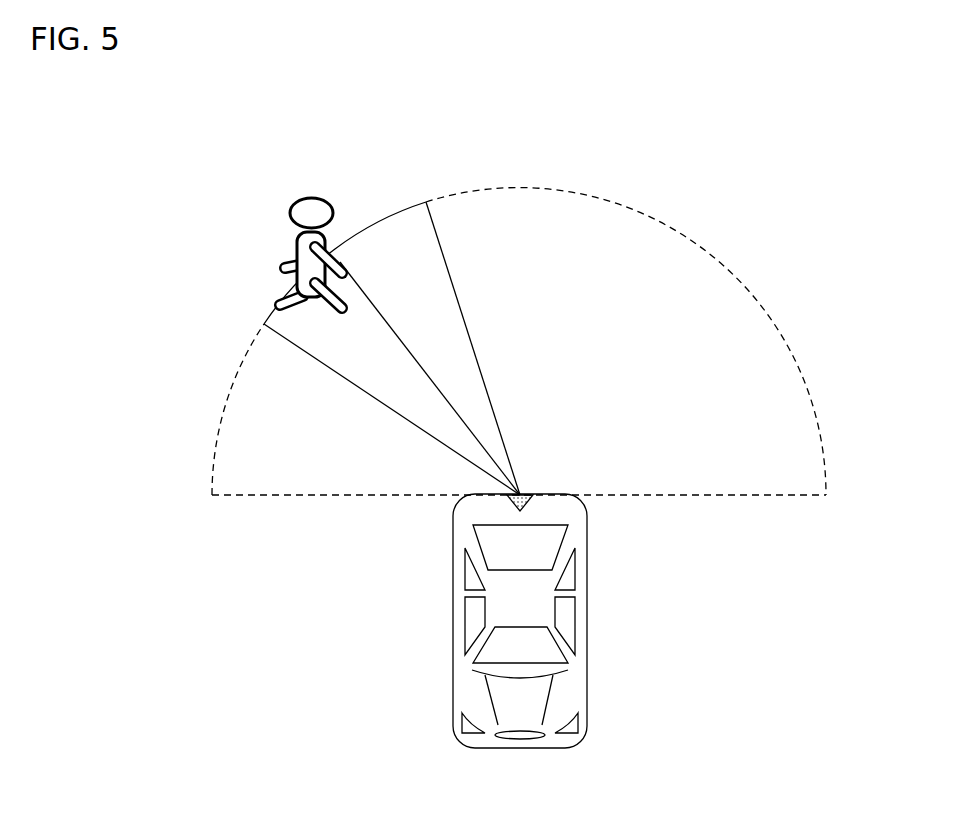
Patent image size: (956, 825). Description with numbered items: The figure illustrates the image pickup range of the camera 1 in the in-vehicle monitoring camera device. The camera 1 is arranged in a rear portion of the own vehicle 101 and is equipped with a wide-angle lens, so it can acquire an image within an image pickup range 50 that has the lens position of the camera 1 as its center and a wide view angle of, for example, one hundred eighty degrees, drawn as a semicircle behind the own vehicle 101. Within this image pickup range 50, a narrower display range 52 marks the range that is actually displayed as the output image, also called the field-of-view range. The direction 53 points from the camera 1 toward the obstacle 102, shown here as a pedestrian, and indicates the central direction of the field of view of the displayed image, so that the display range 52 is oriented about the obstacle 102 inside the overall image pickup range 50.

The camera 1 is at (530, 492).
The image pickup range 50 is at (778, 327).
The display range 52 is at (452, 290).
The direction of the obstacle 53 is at (445, 402).
The own vehicle 101 is at (588, 604).
The obstacle 102 is at (296, 197).